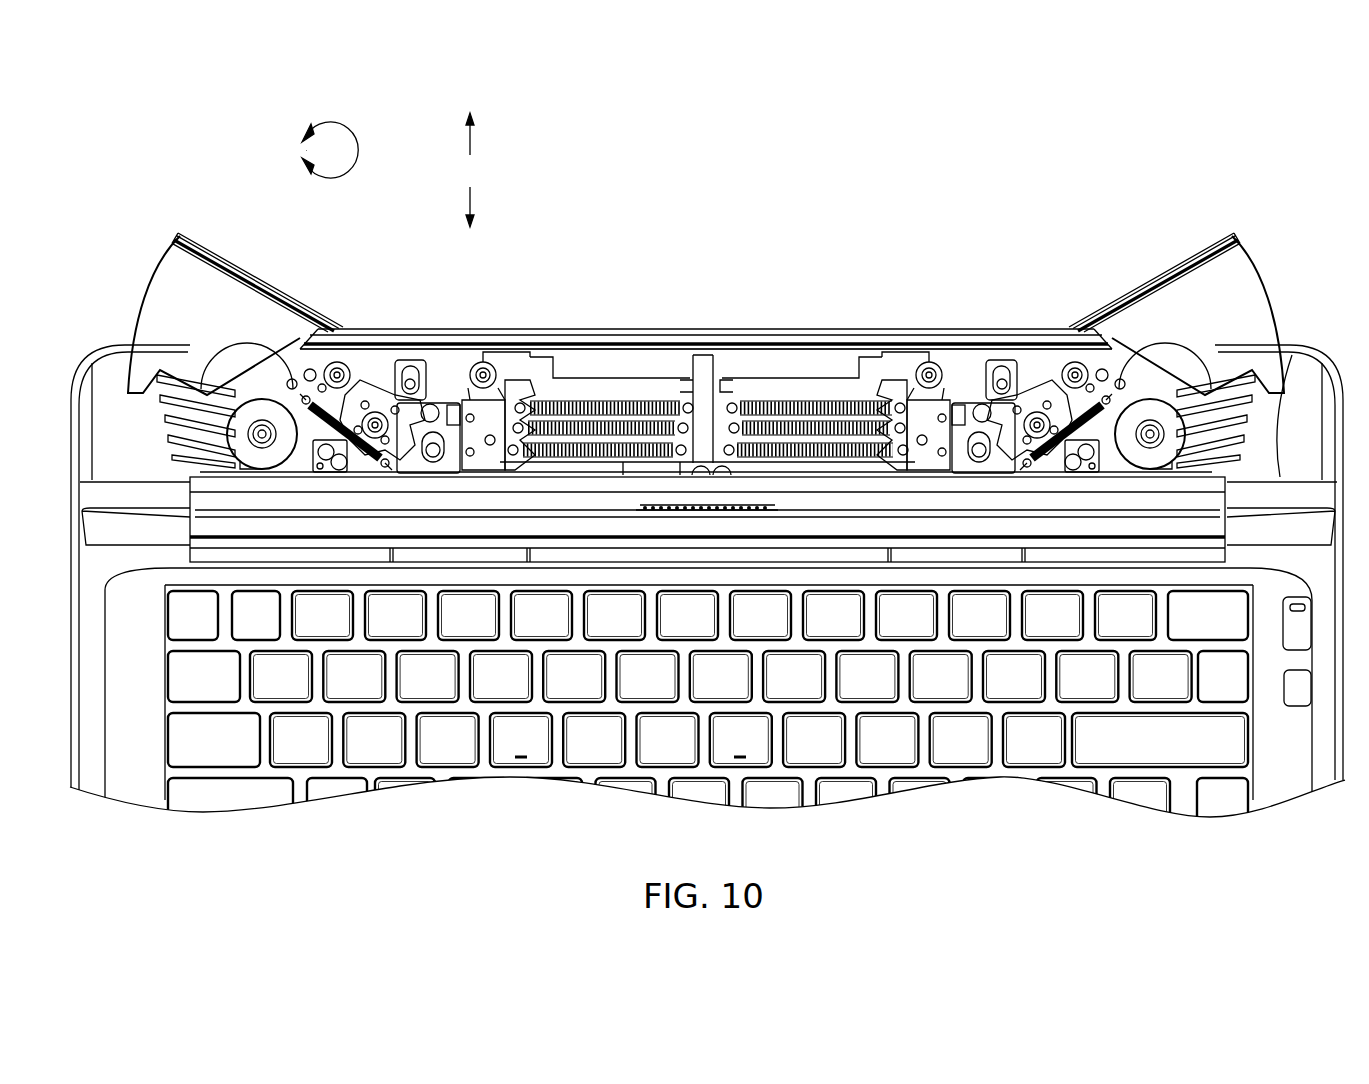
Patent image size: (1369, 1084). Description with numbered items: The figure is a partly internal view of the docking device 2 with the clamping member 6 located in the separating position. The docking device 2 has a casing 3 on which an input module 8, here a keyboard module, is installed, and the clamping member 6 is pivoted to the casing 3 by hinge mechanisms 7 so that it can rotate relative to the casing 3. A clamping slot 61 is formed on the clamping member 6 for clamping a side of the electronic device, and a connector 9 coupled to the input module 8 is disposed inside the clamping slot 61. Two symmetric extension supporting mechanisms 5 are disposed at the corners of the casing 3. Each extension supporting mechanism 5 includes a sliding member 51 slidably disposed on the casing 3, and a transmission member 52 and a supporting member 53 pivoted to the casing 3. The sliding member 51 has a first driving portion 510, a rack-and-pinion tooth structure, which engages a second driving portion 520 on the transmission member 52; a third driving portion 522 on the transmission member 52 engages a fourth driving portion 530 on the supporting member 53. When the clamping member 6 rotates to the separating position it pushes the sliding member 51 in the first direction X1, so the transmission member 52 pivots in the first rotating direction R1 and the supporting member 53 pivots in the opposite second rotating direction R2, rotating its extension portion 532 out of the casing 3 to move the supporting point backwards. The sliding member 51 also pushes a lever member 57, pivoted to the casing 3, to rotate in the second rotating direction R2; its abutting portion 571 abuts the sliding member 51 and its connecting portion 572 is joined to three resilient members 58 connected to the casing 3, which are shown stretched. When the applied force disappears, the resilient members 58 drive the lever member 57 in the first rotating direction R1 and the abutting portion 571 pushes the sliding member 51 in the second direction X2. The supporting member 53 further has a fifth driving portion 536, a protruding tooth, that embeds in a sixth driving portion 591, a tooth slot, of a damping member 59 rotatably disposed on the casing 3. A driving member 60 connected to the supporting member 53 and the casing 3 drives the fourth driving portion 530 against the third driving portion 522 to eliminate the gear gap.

The docking device 2 is at (1232, 172).
The casing 3 is at (1328, 745).
The extension supporting mechanism 5 is at (150, 226).
The clamping member 6 is at (302, 552).
The hinge mechanism 7 is at (258, 420).
The input module 8 is at (1152, 740).
The connector 9 is at (760, 500).
The sliding member 51 is at (432, 415).
The transmission member 52 is at (380, 420).
The supporting member 53 is at (310, 402).
The lever member 57 is at (492, 370).
The resilient member 58 is at (638, 402).
The damping member 59 is at (215, 372).
The driving member 60 is at (370, 462).
The clamping slot 61 is at (250, 532).
The first driving portion 510 is at (410, 382).
The second driving portion 520 is at (370, 445).
The third driving portion 522 is at (362, 412).
The fourth driving portion 530 is at (338, 389).
The extension portion 532 is at (163, 305).
The fifth driving portion 536 is at (296, 384).
The abutting portion 571 is at (472, 402).
The connecting portion 572 is at (527, 400).
The sixth driving portion 591 is at (262, 432).
The first rotating direction R1 is at (330, 131).
The second rotating direction R2 is at (325, 189).
The first direction X1 is at (452, 138).
The second direction X2 is at (452, 206).